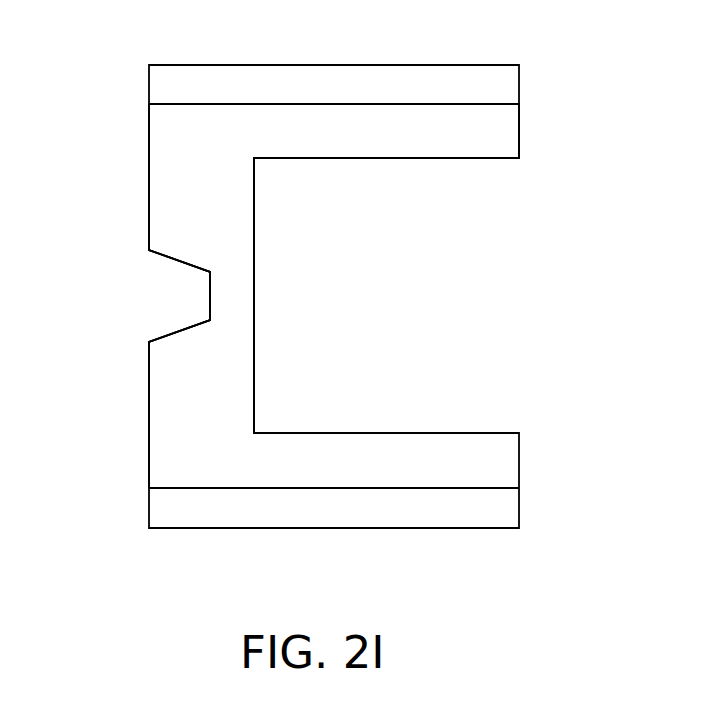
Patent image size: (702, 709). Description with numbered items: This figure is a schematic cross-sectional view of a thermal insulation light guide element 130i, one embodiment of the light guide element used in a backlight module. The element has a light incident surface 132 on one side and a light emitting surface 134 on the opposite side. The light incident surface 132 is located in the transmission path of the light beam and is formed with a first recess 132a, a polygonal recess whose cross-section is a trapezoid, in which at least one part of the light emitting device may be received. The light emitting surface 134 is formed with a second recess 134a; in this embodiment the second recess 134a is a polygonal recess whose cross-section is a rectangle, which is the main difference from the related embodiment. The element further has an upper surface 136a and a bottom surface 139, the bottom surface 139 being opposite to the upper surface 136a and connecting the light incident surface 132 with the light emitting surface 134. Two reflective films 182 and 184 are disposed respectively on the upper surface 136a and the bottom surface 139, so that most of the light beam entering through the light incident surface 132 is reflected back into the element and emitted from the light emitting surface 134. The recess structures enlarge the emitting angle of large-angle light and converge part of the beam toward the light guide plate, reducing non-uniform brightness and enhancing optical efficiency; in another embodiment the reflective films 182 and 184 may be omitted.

The thermal insulation light guide element 130i is at (591, 598).
The light incident surface 132 is at (147, 178).
The first recess 132a is at (160, 299).
The light emitting surface 134 is at (255, 233).
The second recess 134a is at (452, 362).
The upper surface 136a is at (457, 103).
The bottom surface 139 is at (193, 489).
The reflective film 182 is at (495, 78).
The reflective film 184 is at (495, 510).